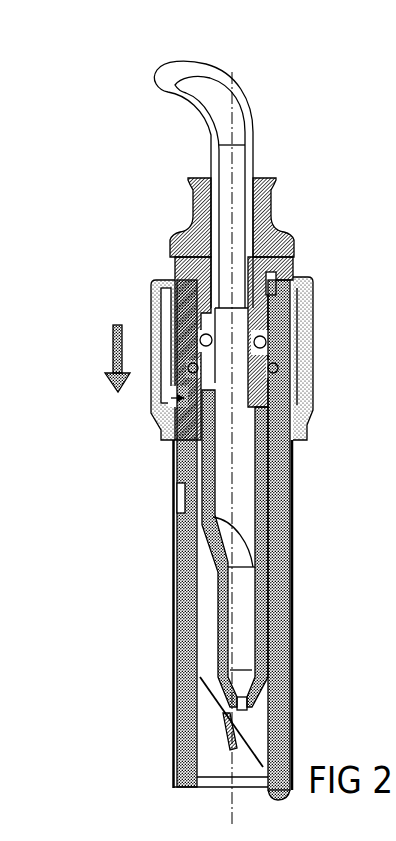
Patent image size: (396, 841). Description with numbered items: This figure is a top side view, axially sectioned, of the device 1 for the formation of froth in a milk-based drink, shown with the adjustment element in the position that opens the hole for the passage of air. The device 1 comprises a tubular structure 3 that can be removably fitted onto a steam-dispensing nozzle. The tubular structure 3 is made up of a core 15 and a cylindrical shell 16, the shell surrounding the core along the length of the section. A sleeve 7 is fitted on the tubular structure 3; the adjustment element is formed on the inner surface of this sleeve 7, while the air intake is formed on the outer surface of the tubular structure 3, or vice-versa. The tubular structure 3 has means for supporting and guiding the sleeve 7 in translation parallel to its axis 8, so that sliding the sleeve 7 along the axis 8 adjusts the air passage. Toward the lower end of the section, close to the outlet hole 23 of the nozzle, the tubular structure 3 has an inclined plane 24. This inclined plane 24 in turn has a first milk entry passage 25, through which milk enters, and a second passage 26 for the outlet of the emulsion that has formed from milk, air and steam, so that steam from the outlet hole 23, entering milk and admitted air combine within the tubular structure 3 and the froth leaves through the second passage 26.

The device for the formation of froth 1 is at (138, 162).
The tubular structure 3 is at (224, 556).
The sleeve 7 is at (314, 351).
The axis 8 is at (234, 162).
The core 15 is at (289, 548).
The cylindrical shell 16 is at (315, 603).
The outlet hole 23 is at (247, 712).
The inclined plane 24 is at (225, 727).
The first milk entry passage 25 is at (210, 706).
The second passage 26 is at (232, 752).